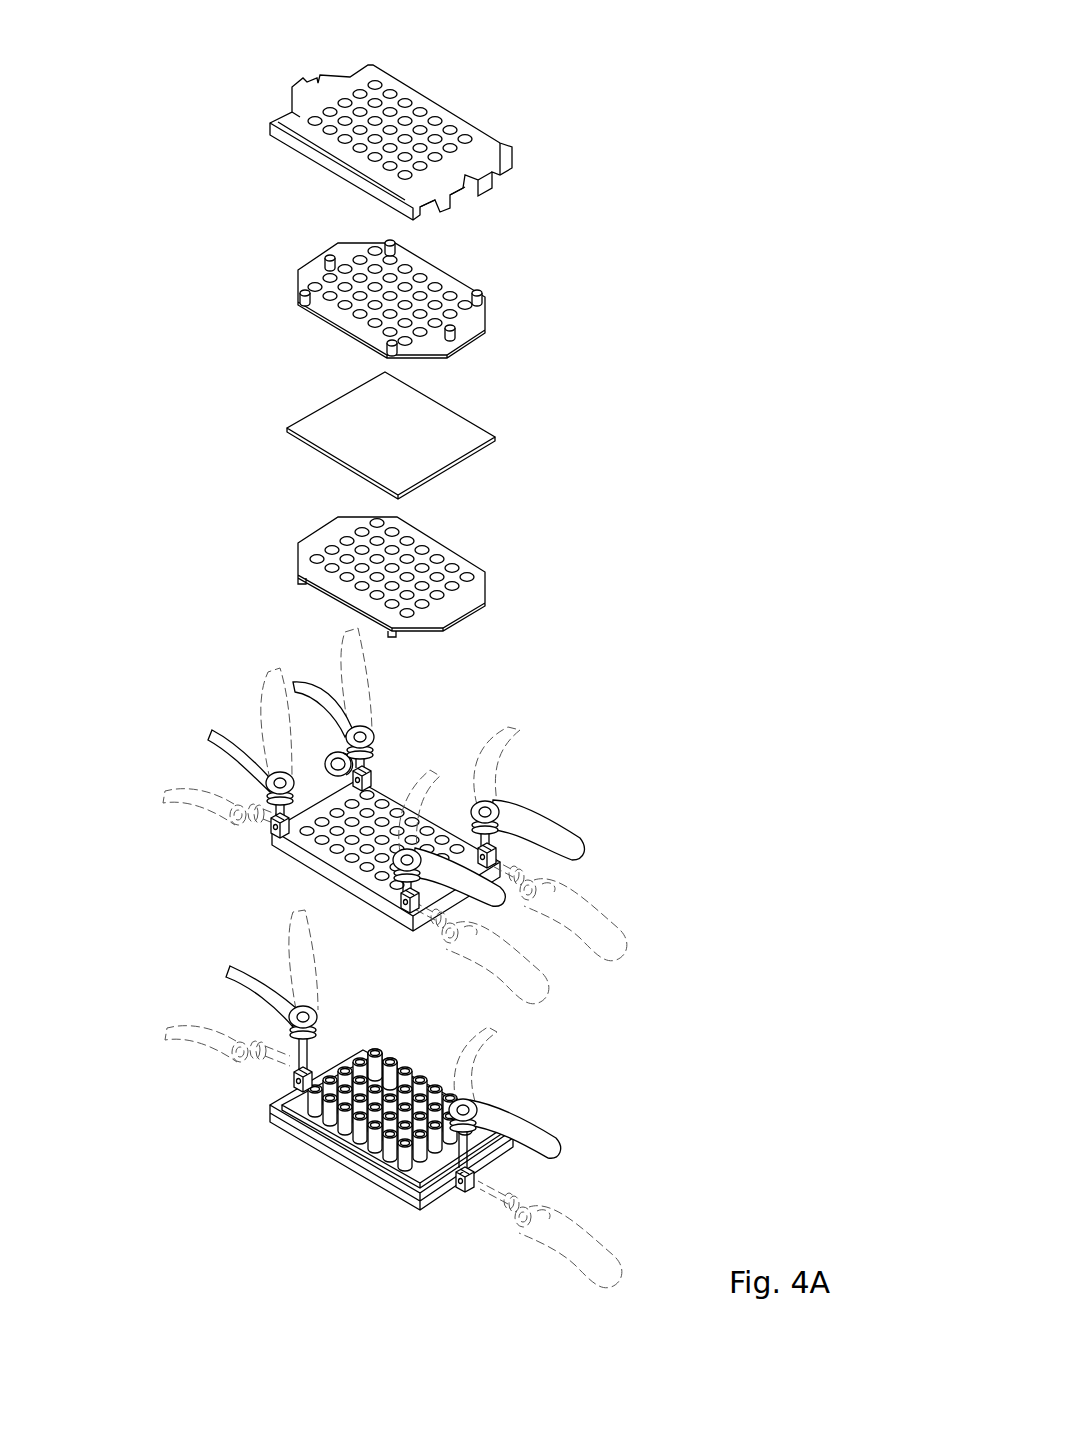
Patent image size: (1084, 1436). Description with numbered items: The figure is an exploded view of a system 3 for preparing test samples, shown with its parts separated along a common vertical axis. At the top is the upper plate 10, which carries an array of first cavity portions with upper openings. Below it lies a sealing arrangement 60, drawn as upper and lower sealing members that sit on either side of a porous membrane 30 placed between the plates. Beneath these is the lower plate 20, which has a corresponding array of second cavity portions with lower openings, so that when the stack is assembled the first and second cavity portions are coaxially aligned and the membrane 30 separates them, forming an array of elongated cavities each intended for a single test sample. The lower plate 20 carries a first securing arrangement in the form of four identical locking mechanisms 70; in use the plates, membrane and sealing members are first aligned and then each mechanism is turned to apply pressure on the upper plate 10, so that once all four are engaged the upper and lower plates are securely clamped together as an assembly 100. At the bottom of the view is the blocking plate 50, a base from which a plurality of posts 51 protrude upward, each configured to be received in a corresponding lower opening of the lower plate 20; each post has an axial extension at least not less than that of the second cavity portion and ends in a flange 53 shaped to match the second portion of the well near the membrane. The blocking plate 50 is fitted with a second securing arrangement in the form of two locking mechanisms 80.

The system 3 is at (698, 60).
The upper plate 10 is at (506, 121).
The lower plate 20 is at (300, 857).
The porous membrane 30 is at (316, 383).
The blocking plate 50 is at (337, 1178).
The posts 51 is at (320, 1120).
The flange 53 is at (390, 1066).
The sealing arrangement 60 is at (510, 325).
The locking mechanisms 70 is at (580, 776).
The locking mechanisms 80 is at (628, 1160).
The assembly 100 is at (100, 50).